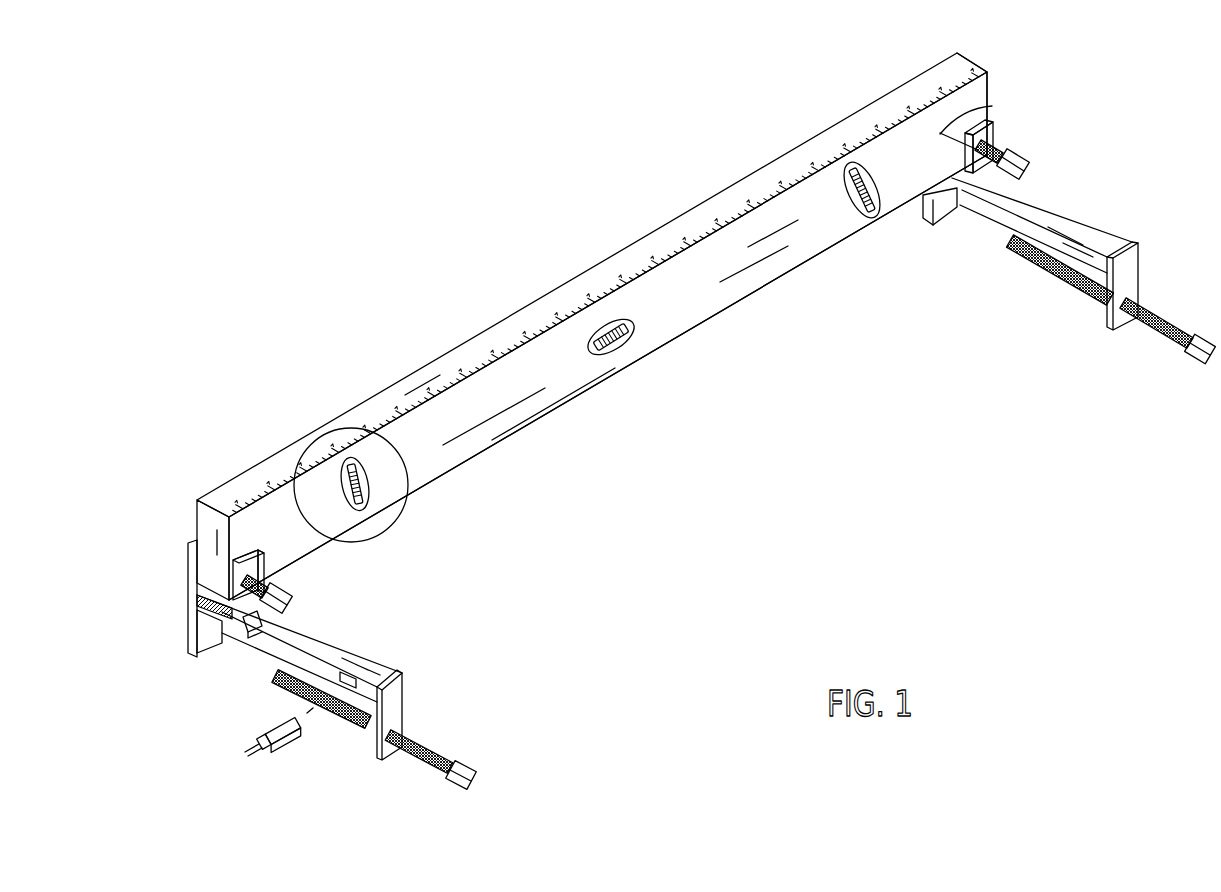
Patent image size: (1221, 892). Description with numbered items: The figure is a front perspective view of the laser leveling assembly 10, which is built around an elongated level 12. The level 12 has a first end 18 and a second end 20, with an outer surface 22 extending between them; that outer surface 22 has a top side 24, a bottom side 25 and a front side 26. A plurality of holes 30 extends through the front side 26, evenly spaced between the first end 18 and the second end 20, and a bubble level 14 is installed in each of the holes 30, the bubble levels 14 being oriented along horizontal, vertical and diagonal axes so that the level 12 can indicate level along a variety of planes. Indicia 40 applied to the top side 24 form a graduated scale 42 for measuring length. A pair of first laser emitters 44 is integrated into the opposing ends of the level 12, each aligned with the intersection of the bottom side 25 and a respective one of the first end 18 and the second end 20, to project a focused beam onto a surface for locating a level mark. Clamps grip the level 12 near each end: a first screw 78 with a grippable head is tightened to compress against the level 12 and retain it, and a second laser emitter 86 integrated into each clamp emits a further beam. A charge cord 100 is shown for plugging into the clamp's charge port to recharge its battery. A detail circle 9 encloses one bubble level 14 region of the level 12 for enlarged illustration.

The detail circle 9 is at (313, 442).
The laser leveling assembly 10 is at (458, 122).
The level 12 is at (570, 245).
The bubble levels 14 is at (378, 452).
The first end 18 is at (200, 522).
The second end 20 is at (975, 62).
The outer surface 22 is at (791, 250).
The top side 24 is at (440, 362).
The bottom side 25 is at (460, 478).
The front side 26 is at (520, 382).
The holes 30 is at (367, 490).
The indicia 40 is at (532, 312).
The graduated scale 42 is at (408, 403).
The first laser emitters 44 is at (232, 583).
The first screw 78 is at (350, 718).
The second laser emitters 86 is at (205, 622).
The charge cord 100 is at (262, 734).